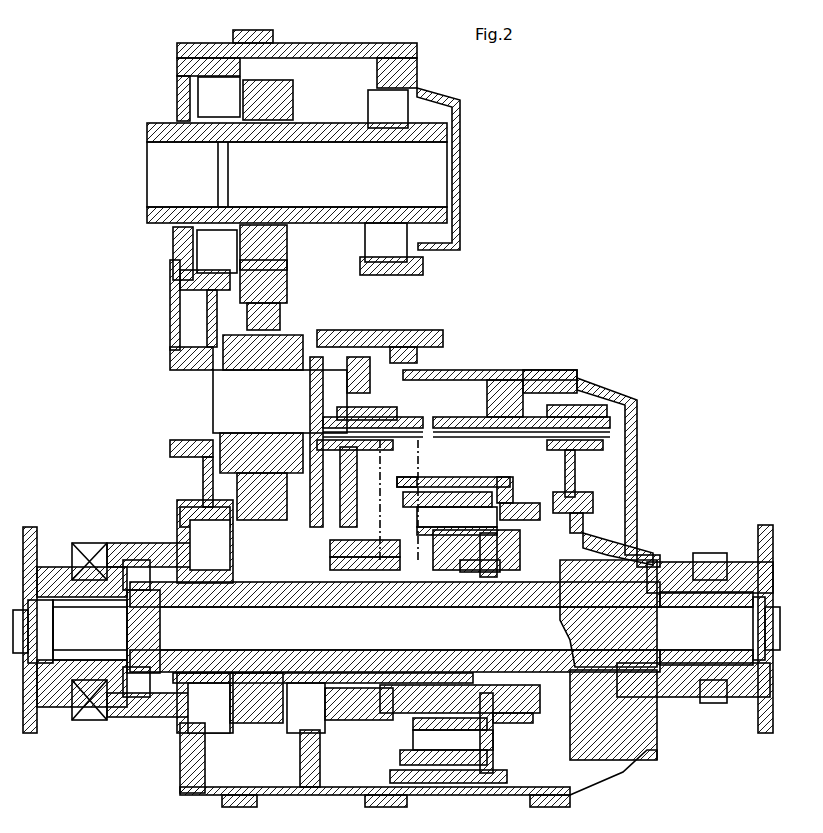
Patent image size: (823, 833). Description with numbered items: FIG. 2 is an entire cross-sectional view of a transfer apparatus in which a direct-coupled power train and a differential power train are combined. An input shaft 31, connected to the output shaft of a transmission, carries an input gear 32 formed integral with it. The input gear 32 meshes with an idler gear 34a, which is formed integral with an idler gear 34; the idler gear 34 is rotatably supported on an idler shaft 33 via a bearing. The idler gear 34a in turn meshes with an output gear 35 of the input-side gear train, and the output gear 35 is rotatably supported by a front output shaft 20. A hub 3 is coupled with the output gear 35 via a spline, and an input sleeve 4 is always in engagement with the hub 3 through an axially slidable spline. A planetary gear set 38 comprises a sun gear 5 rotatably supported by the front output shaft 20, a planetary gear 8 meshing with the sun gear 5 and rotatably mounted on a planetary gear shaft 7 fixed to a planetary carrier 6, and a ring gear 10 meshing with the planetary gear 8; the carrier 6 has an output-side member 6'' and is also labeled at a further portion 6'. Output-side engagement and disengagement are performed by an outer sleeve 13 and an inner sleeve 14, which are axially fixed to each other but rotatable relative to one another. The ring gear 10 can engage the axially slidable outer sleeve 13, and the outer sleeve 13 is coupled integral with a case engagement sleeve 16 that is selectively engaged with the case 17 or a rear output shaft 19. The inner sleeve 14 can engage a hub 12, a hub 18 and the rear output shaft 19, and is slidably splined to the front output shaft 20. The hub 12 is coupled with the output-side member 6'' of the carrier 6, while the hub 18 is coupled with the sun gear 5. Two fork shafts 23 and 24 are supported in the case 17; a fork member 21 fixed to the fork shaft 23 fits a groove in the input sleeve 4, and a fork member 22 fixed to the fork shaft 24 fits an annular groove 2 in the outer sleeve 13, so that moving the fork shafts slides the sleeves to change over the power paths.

The annular groove 2 is at (543, 405).
The hub 3 is at (347, 573).
The input sleeve 4 is at (368, 580).
The sun gear 5 is at (445, 573).
The planetary carrier 6 is at (393, 500).
The clutch plate 6' is at (403, 469).
The output-side member of the planetary carrier 6'' is at (480, 595).
The planetary gear shaft 7 is at (450, 480).
The planetary gear 8 is at (476, 512).
The ring gear 10 is at (462, 482).
The hub 12 is at (520, 495).
The outer sleeve 13 is at (593, 503).
The inner sleeve 14 is at (583, 523).
The case engagement sleeve 16 is at (597, 533).
The case 17 is at (653, 557).
The hub 18 is at (515, 596).
The rear output shaft 19 is at (633, 660).
The front output shaft 20 is at (180, 597).
The fork member 21 is at (317, 447).
The fork member 22 is at (573, 468).
The fork shaft 23 is at (410, 420).
The fork shaft 24 is at (597, 423).
The input shaft 31 is at (152, 187).
The input gear 32 is at (283, 68).
The idler shaft 33 is at (218, 393).
The idler gear 34 is at (286, 298).
The idler gear 34a is at (292, 273).
The output gear 35 is at (247, 553).
The planetary gear set 38 is at (457, 463).